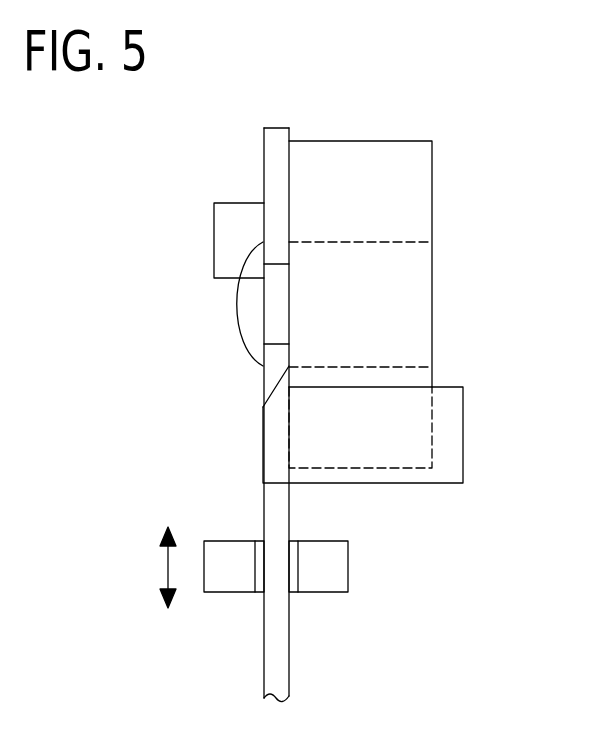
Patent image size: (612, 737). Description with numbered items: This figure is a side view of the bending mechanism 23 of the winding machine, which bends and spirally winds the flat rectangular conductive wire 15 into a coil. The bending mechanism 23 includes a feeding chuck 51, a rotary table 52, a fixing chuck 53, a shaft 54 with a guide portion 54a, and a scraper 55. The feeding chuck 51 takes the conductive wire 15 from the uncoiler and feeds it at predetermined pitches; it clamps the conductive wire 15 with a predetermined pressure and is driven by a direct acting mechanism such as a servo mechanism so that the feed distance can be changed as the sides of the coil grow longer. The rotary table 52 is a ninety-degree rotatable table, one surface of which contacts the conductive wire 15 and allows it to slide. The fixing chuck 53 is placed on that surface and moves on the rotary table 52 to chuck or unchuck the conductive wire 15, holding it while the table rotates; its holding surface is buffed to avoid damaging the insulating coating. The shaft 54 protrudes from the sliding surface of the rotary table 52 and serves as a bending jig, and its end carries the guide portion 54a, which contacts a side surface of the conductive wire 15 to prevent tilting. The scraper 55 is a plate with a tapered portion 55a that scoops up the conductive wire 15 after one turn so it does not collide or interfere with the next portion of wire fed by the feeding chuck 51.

The flat rectangular conductive wire 15 is at (280, 635).
The bending mechanism 23 is at (517, 372).
The feeding chuck 51 is at (343, 567).
The rotary table 52 is at (427, 198).
The fixing chuck 53 is at (220, 233).
The shaft 54 is at (267, 327).
The guide portion 54a is at (243, 305).
The scraper 55 is at (268, 438).
The tapered portion 55a is at (270, 387).